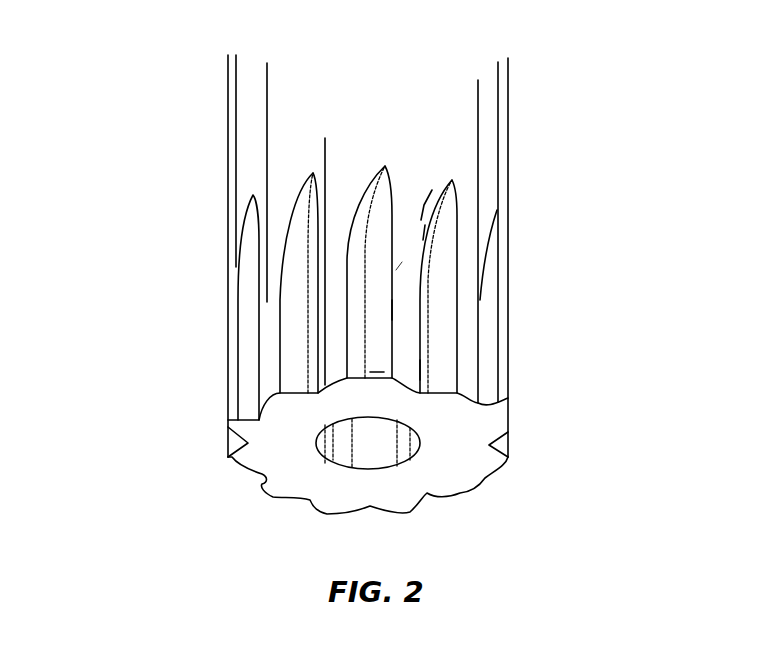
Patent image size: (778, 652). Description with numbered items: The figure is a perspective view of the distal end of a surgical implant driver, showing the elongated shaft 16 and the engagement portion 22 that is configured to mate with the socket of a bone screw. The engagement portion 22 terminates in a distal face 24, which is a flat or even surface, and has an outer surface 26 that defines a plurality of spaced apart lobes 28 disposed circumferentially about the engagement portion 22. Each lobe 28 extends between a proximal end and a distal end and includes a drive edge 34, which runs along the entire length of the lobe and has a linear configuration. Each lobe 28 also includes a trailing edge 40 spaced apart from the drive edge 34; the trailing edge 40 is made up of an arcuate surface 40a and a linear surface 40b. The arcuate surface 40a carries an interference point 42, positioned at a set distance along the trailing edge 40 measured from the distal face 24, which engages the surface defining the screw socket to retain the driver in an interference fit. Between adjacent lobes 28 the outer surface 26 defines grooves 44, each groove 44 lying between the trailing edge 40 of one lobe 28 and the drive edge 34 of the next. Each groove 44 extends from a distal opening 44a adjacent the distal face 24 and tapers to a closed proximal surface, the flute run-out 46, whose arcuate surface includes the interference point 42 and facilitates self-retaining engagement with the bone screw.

The elongated shaft 16 is at (243, 107).
The engagement portion 22 is at (152, 484).
The distal face 24 is at (447, 457).
The outer surface 26 is at (232, 393).
The lobe 28 is at (403, 263).
The drive edge 34 is at (394, 310).
The trailing edge 40 is at (444, 284).
The arcuate surface 40a is at (432, 220).
The linear surface 40b is at (423, 368).
The interference point 42 is at (428, 238).
The groove 44 is at (357, 370).
The distal opening 44a is at (377, 370).
The flute run-out 46 is at (378, 188).